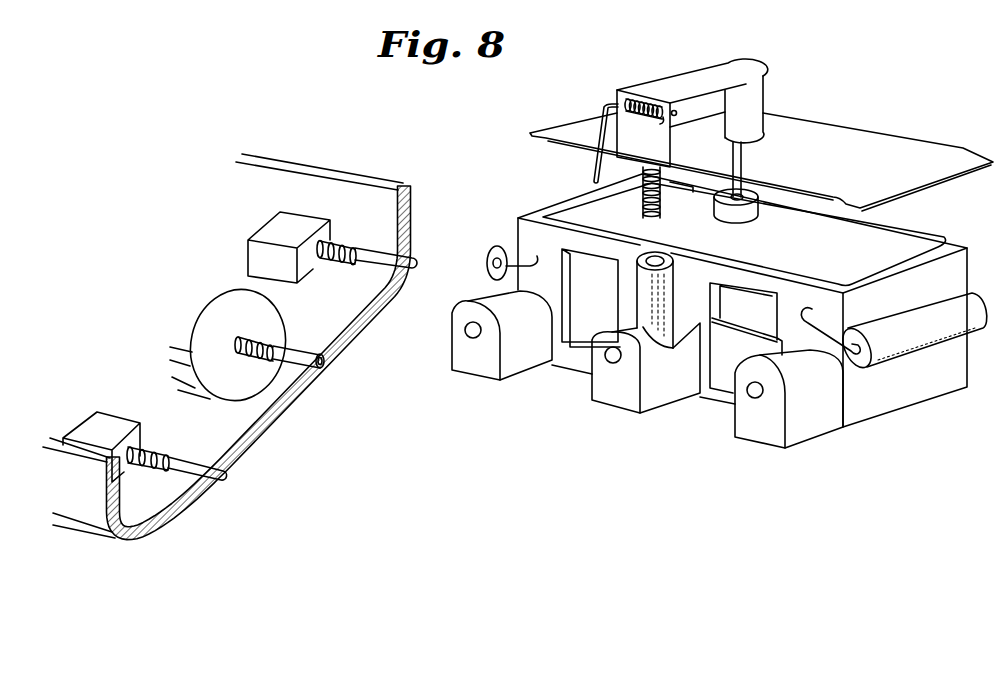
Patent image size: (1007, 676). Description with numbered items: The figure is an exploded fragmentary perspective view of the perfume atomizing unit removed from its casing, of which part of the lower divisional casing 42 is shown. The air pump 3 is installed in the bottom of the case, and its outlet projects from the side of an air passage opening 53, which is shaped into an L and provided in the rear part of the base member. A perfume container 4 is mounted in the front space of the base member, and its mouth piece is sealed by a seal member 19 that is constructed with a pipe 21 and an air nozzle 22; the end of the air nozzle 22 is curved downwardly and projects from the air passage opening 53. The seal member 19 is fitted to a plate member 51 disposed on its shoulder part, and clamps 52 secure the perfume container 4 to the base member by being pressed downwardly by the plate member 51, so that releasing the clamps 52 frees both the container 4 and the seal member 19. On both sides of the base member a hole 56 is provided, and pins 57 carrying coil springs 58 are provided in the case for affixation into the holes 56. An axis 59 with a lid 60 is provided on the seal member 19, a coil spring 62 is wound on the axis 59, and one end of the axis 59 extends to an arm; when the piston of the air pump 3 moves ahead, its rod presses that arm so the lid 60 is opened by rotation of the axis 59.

The air pump 3 is at (252, 291).
The perfume container 4 is at (913, 247).
The seal member 19 is at (764, 104).
The pipe 21 is at (743, 196).
The air nozzle 22 is at (662, 214).
The lower divisional casing 42 is at (337, 174).
The plate member 51 is at (858, 136).
The clamps 52 is at (502, 246).
The air passage opening 53 is at (612, 357).
The holes 56 is at (472, 332).
The pins 57 is at (379, 255).
The coil springs 58 is at (344, 259).
The axis 59 is at (676, 110).
The lid 60 is at (745, 65).
The coil spring 62 is at (647, 103).